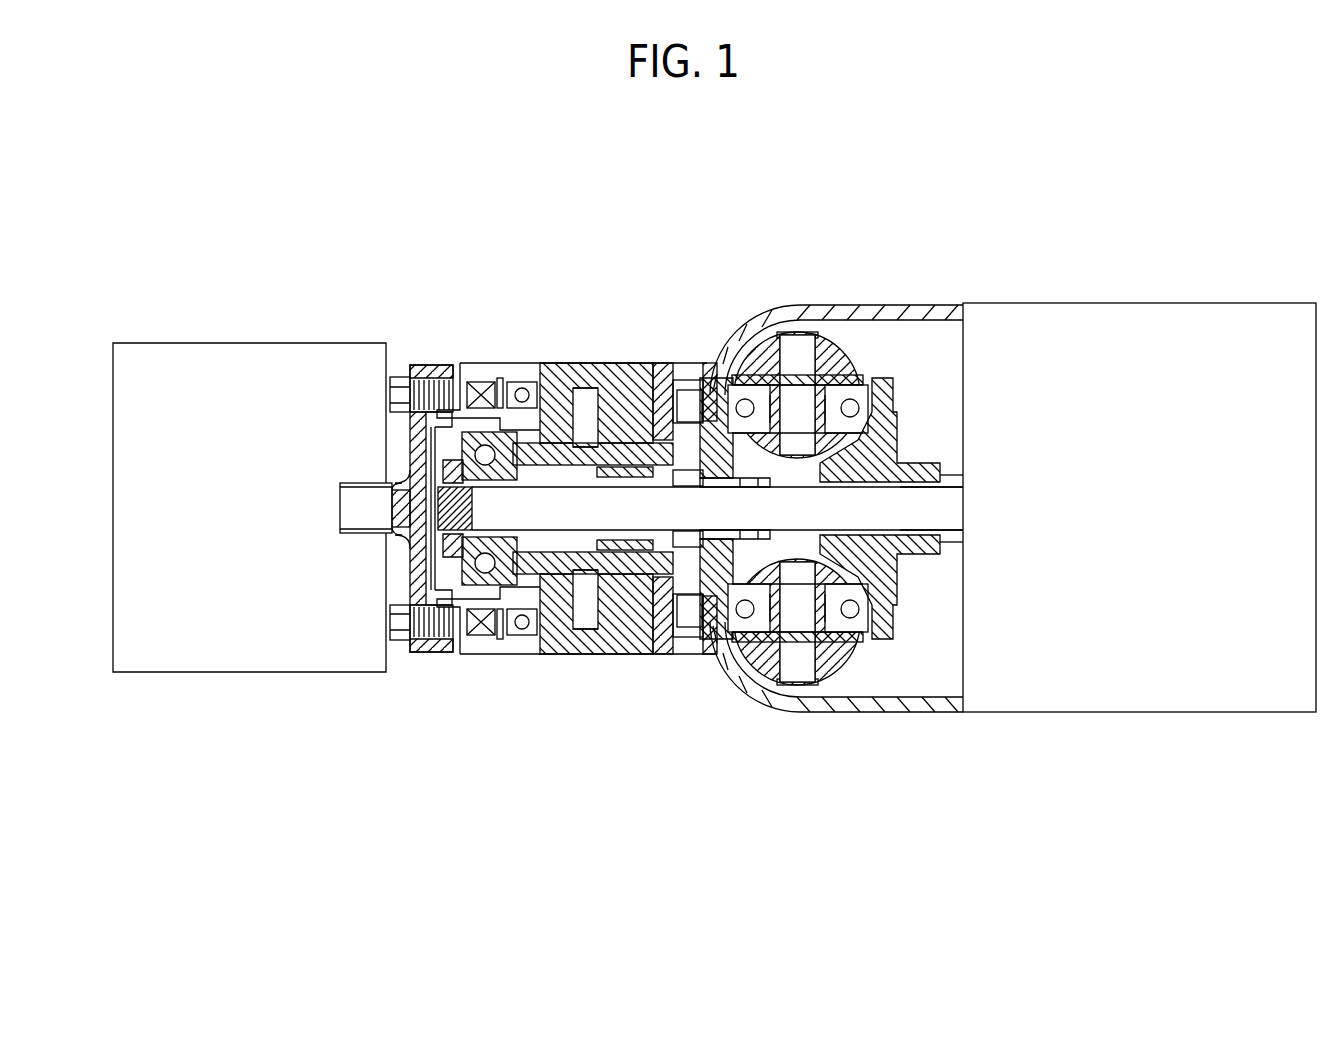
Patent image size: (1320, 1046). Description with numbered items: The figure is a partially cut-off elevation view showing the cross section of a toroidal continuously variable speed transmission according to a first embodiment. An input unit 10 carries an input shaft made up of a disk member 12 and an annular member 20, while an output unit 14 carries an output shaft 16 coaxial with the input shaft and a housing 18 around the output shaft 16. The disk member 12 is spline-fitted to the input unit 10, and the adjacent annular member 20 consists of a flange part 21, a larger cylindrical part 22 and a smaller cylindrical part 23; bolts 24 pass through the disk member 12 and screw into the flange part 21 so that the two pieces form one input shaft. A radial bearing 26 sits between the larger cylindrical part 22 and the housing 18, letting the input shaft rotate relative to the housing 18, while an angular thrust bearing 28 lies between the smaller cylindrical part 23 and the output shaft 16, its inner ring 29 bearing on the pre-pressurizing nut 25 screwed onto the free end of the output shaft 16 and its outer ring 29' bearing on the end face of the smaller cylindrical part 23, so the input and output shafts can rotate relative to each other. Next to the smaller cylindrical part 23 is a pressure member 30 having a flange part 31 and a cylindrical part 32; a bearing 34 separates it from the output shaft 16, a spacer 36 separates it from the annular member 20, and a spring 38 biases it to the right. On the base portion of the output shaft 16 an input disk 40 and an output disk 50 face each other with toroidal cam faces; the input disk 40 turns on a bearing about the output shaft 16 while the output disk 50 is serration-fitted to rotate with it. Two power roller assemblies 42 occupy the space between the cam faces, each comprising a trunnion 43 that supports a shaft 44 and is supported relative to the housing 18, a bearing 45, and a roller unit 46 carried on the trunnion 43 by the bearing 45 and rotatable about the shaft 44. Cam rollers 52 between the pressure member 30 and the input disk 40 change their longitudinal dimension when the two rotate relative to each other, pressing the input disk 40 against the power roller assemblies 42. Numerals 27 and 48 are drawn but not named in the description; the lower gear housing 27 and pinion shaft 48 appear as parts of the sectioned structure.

The input unit 10 is at (269, 355).
The disk member 12 is at (422, 367).
The output unit 14 is at (1130, 700).
The output shaft 16 is at (868, 524).
The housing 18 is at (850, 305).
The annular member 20 is at (459, 352).
The flange part 21 is at (449, 647).
The larger cylindrical part 22 is at (495, 647).
The smaller cylindrical part 23 is at (558, 548).
The bolts 24 is at (403, 638).
The pre-pressurizing nut 25 is at (484, 531).
The bearing 26 is at (530, 360).
The lower gear housing 27 is at (565, 640).
The bearing 28 is at (437, 602).
The inner ring 29 is at (510, 508).
The outer ring 29' is at (389, 553).
The pressure member 30 is at (666, 360).
The flange part 31 is at (632, 360).
The cylindrical part 32 is at (633, 480).
The bearing 34 is at (693, 490).
The spacer 36 is at (643, 637).
The spring 38 is at (660, 538).
The input disk 40 is at (704, 358).
The power roller assembly 42 is at (748, 487).
The trunnion 43 is at (863, 662).
The shaft 44 is at (816, 647).
The bearing 45 is at (877, 596).
The roller unit 46 is at (877, 574).
The pinion shaft 48 is at (793, 332).
The output disk 50 is at (890, 397).
The cam rollers 52 is at (692, 640).